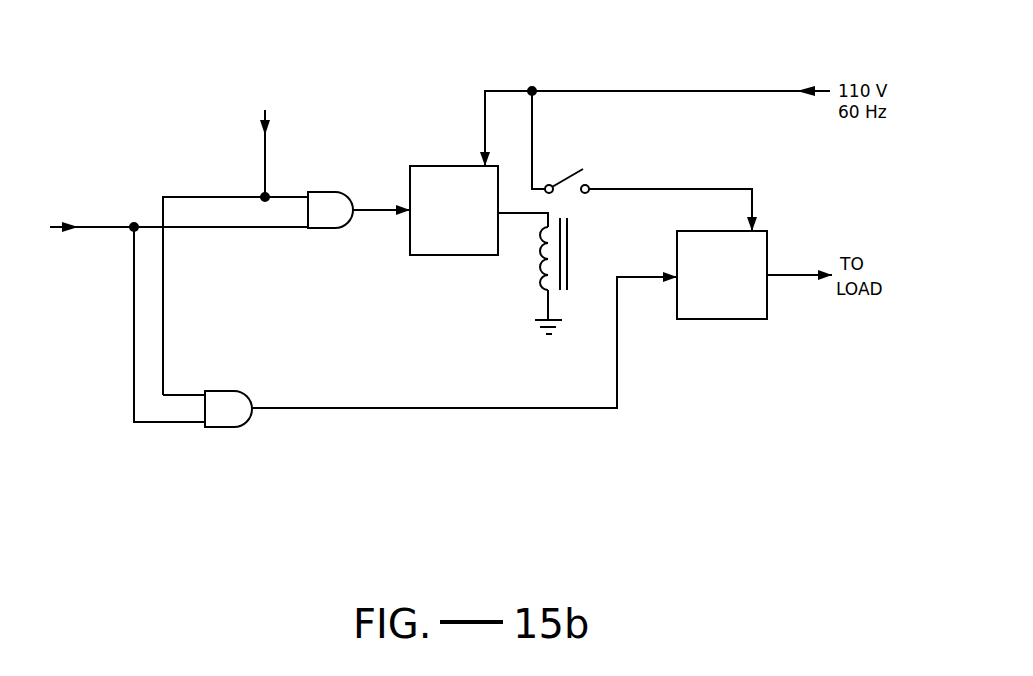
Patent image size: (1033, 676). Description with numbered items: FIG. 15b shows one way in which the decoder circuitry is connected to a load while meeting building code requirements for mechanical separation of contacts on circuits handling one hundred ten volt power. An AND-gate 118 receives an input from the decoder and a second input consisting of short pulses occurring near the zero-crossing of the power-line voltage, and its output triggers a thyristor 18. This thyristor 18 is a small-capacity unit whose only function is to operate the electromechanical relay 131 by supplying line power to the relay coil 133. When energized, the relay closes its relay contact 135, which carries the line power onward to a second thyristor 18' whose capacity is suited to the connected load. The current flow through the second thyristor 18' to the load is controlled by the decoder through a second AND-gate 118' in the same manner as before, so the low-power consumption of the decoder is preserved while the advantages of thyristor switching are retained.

The AND-gate 118 is at (326, 184).
The AND-gate 118' is at (235, 386).
The thyristor 18 is at (449, 188).
The second thyristor 18' is at (722, 298).
The electromechanical relay 131 is at (528, 271).
The relay coil 133 is at (560, 257).
The relay contact 135 is at (568, 182).